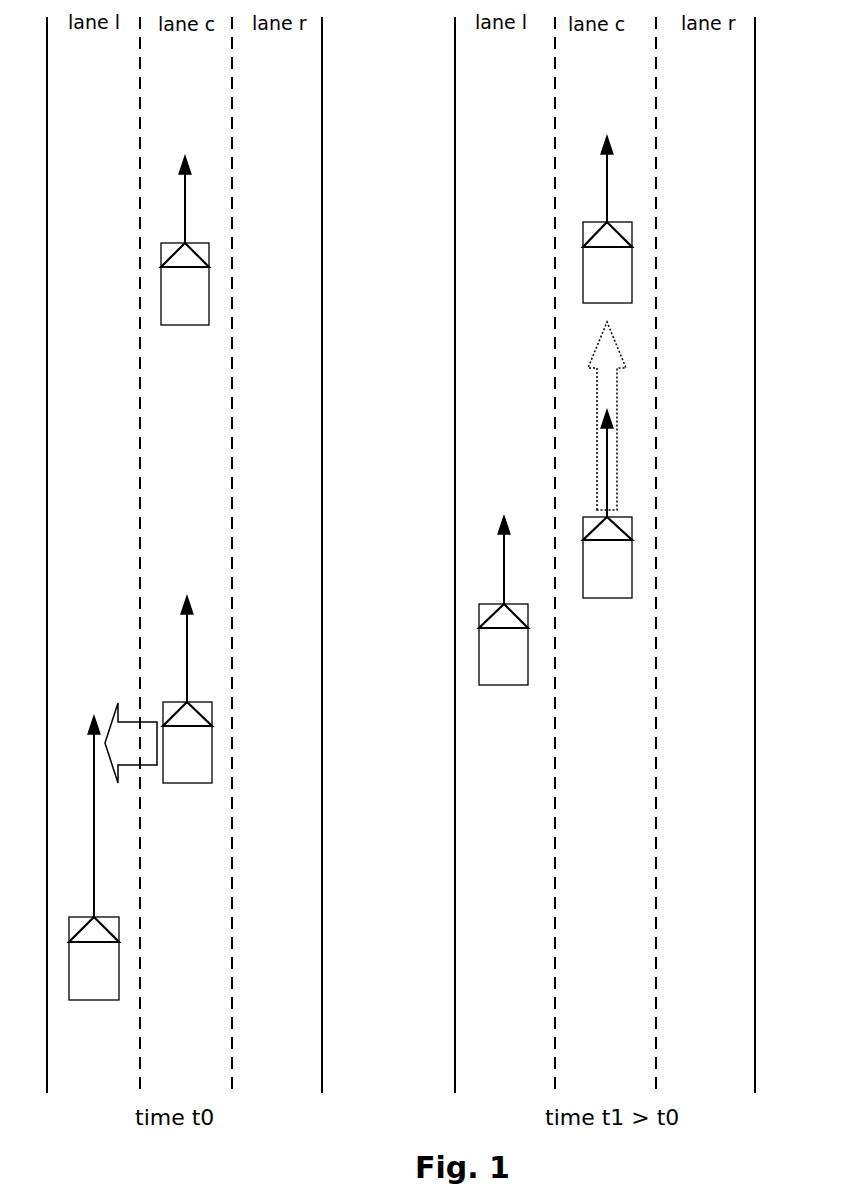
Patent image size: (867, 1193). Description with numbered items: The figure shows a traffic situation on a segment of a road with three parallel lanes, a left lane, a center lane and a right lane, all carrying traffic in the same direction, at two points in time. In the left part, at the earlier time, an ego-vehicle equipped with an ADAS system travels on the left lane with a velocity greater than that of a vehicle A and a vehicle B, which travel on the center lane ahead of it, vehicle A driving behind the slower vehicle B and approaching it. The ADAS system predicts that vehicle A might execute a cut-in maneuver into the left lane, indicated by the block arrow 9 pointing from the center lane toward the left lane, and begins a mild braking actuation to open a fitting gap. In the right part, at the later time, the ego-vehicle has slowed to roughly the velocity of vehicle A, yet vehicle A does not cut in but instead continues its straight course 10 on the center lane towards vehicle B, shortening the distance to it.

The lane change maneuver of ego vehicle 9 is at (127, 718).
The straight course 10 is at (597, 360).